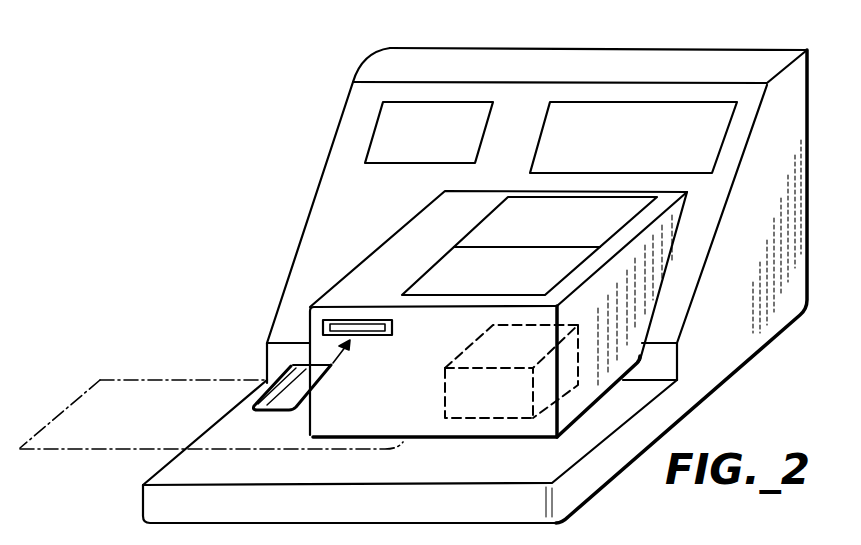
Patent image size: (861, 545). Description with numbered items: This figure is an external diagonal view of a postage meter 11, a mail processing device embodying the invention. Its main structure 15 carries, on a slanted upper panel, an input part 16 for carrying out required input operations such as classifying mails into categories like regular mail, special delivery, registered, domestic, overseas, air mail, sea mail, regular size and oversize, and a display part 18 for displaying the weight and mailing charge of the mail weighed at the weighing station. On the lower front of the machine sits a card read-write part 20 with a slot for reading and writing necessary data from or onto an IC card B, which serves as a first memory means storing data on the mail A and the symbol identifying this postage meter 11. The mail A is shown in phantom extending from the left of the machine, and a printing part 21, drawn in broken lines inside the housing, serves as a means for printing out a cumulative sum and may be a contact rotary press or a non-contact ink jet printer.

The postage meter 11 is at (314, 102).
The main structure 15 is at (811, 78).
The input part 16 is at (632, 110).
The display part 18 is at (410, 110).
The card read-write part 20 is at (333, 318).
The printing part 21 is at (498, 420).
The mail A is at (183, 380).
The IC card B is at (305, 383).